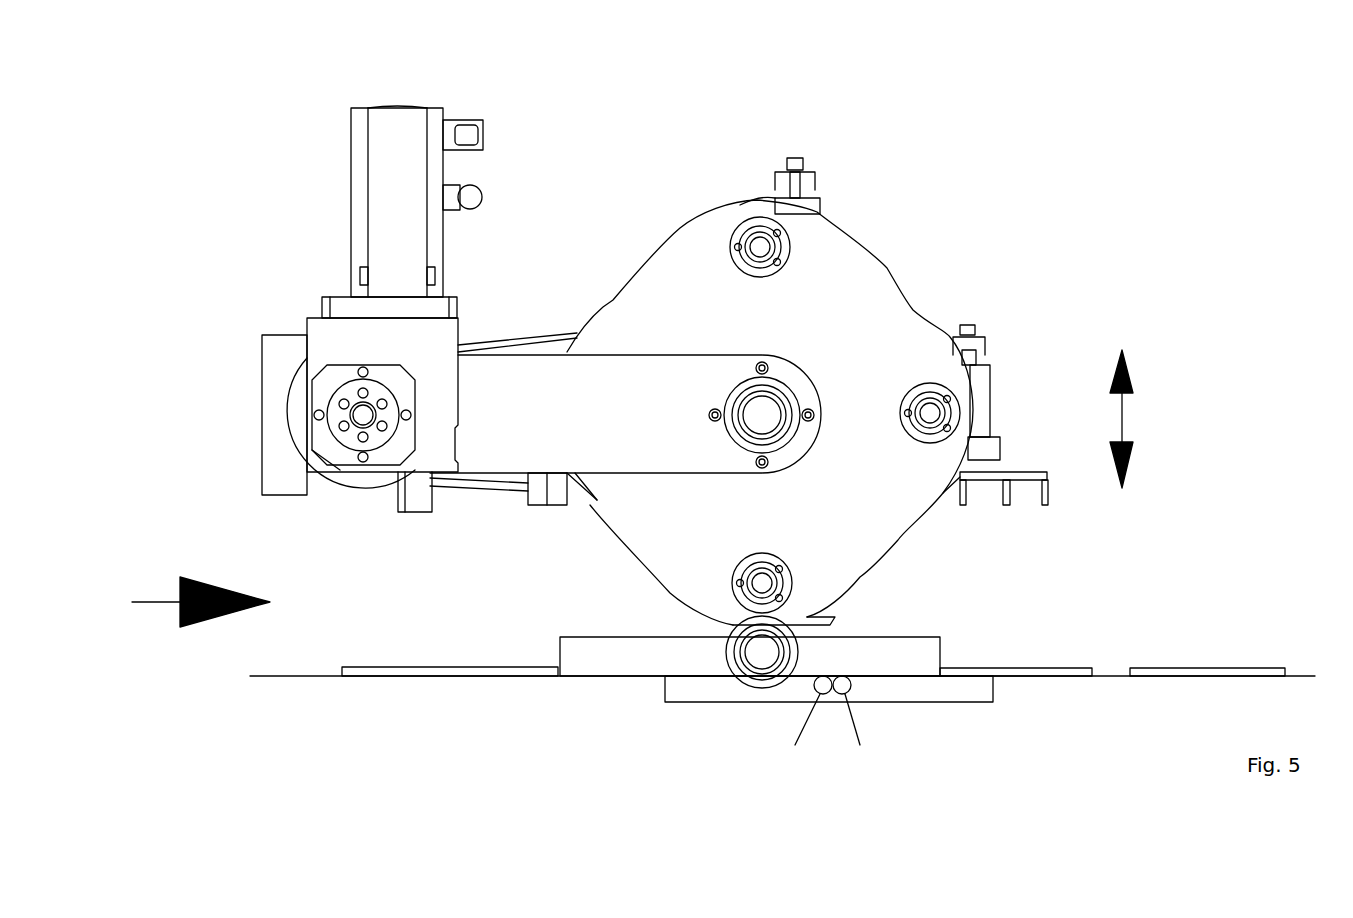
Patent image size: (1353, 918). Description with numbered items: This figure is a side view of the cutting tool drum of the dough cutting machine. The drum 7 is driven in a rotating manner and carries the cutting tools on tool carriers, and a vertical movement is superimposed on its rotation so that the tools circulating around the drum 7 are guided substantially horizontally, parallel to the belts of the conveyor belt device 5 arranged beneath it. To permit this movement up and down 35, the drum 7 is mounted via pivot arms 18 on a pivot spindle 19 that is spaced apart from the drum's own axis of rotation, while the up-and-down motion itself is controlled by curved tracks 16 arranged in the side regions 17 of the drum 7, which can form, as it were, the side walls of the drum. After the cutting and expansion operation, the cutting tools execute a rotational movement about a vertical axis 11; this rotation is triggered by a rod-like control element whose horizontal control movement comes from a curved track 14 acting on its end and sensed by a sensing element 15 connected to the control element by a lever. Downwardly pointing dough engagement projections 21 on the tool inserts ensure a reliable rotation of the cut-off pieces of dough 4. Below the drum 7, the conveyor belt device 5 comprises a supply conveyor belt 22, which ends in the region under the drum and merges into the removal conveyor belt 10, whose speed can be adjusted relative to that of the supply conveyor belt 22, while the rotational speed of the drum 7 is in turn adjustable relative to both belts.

The cut-off pieces of dough 4 is at (1112, 625).
The conveyor belt device 5 is at (296, 705).
The drum 7 is at (857, 192).
The removal conveyor belt 10 is at (1125, 677).
The vertical axis 11 is at (985, 360).
The curved track 14 is at (915, 637).
The sensing element 15 is at (845, 620).
The curved tracks 16 is at (890, 270).
The side regions 17 is at (672, 553).
The pivot arms 18 is at (503, 382).
The pivot spindle 19 is at (357, 410).
The dough engagement projections 21 is at (1182, 527).
The supply conveyor belt 22 is at (405, 677).
The movement up and down 35 is at (1122, 418).